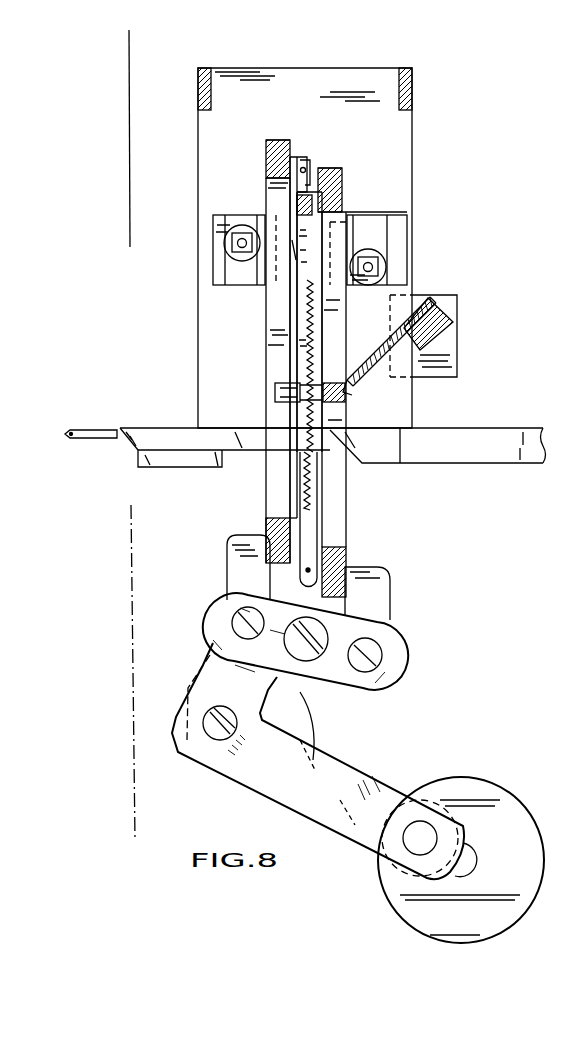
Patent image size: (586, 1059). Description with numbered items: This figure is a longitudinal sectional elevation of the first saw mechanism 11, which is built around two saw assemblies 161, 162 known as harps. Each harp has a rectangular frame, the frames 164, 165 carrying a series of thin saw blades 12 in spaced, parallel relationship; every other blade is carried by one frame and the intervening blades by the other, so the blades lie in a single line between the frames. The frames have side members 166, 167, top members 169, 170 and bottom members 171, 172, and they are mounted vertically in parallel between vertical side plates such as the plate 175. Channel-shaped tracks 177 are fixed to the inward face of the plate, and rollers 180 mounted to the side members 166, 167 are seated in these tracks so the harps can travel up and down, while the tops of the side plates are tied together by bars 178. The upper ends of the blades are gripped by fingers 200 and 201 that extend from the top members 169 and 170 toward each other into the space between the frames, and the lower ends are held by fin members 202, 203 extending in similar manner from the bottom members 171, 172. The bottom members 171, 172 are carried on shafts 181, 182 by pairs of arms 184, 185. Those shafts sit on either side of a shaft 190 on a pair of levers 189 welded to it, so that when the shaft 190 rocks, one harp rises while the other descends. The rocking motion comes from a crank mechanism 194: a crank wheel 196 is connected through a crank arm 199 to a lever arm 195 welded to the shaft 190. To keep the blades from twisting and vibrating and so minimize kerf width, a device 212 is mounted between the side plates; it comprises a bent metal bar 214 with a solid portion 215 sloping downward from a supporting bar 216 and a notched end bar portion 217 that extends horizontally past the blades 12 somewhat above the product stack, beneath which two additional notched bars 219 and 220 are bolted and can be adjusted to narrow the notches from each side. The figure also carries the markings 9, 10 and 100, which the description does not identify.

The section line 9- 9 is at (129, 47).
The section line 10- 10 is at (185, 396).
The first saw mechanism 11 is at (185, 290).
The saw blades 12 is at (303, 250).
The base plate 100 is at (470, 451).
The saw assembly 161 is at (327, 165).
The saw assembly 162 is at (276, 138).
The rectangular frame 164 is at (348, 215).
The rectangular frame 165 is at (264, 186).
The side member 166 is at (338, 330).
The side member 167 is at (277, 350).
The top member 169 is at (342, 180).
The top member 170 is at (265, 150).
The bottom member 171 is at (346, 578).
The bottom member 172 is at (268, 530).
The vertical side plate 175 is at (393, 148).
The channel-shaped track 177 is at (216, 252).
The bar 178 is at (207, 68).
The roller 180 is at (240, 238).
The shaft 181 is at (374, 655).
The shaft 182 is at (240, 618).
The arm 184 is at (376, 600).
The arm 185 is at (229, 560).
The lever 189 is at (344, 690).
The shaft 190 is at (317, 637).
The crank mechanism 194 is at (448, 779).
The lever arm 195 is at (205, 660).
The crank wheel 196 is at (483, 798).
The crank arm 199 is at (355, 776).
The finger 200 is at (296, 199).
The finger 201 is at (301, 160).
The fin member 202 is at (308, 572).
The fin member 203 is at (293, 516).
The device 212 is at (460, 330).
The bent metal bar 214 is at (356, 392).
The solid portion 215 is at (356, 372).
The supporting bar 216 is at (432, 312).
The notched end bar portion 217 is at (285, 384).
The bar 219 is at (278, 392).
The bar 220 is at (281, 400).